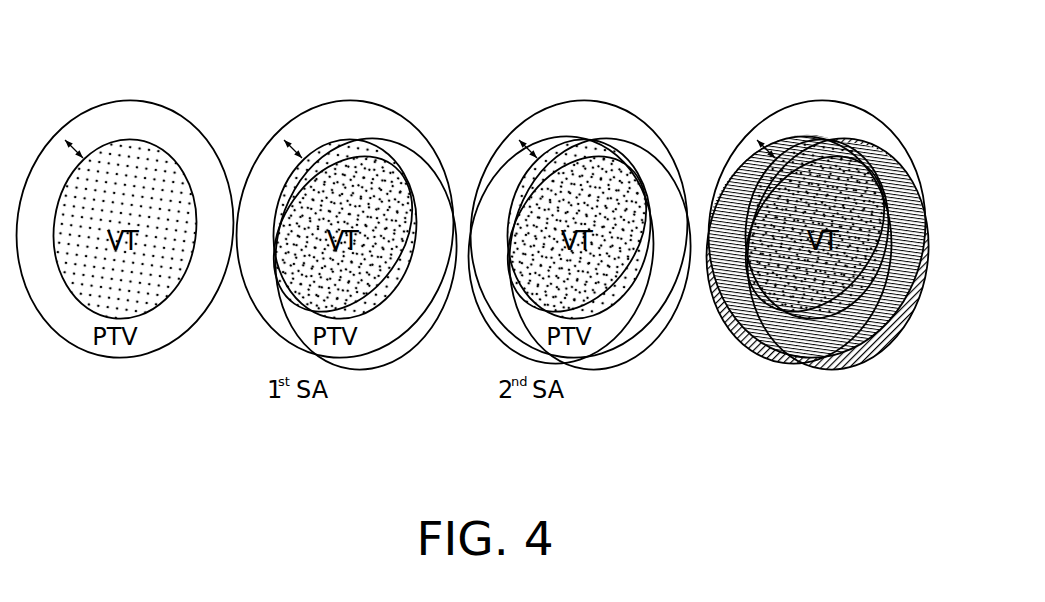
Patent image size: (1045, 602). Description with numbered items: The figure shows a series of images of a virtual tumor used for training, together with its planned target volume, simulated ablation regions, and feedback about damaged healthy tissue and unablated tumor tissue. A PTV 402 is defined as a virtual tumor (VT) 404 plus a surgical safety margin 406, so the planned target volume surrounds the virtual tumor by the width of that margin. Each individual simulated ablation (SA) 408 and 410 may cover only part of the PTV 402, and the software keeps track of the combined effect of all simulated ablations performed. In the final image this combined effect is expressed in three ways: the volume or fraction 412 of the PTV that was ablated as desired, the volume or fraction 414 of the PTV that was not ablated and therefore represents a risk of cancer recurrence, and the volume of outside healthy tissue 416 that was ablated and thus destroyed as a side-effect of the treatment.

The planned target volume (PTV) 402 is at (140, 100).
The virtual tumor (VT) 404 is at (152, 155).
The surgical safety margin 406 is at (74, 149).
The simulated ablation (SA) 408 is at (388, 371).
The simulated ablation (SA) 410 is at (487, 325).
The volume/fraction of the PTV that was ablated 412 is at (752, 180).
The volume/fraction of the PTV that was not ablated 414 is at (850, 138).
The healthy tissue 416 is at (802, 372).